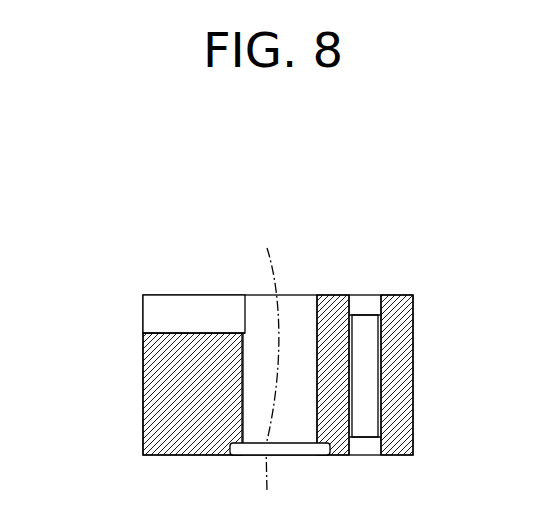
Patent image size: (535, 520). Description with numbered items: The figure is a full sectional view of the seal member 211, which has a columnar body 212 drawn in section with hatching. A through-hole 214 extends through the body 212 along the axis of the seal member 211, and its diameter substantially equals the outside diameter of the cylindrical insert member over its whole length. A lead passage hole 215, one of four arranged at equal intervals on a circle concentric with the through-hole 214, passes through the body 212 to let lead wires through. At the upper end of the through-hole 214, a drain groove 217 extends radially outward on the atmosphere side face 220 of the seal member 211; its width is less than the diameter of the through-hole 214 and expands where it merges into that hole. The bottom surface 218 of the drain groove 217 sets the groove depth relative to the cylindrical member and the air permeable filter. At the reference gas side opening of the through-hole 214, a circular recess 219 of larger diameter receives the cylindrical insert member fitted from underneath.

The seal member 211 is at (434, 233).
The columnar body 212 is at (130, 357).
The through-hole 214 is at (317, 328).
The lead passage hole 215 is at (378, 328).
The drain groove 217 is at (200, 313).
The bottom surface of drain groove 218 is at (177, 333).
The circular recess 219 is at (312, 443).
The atmosphere side face 220 is at (398, 297).